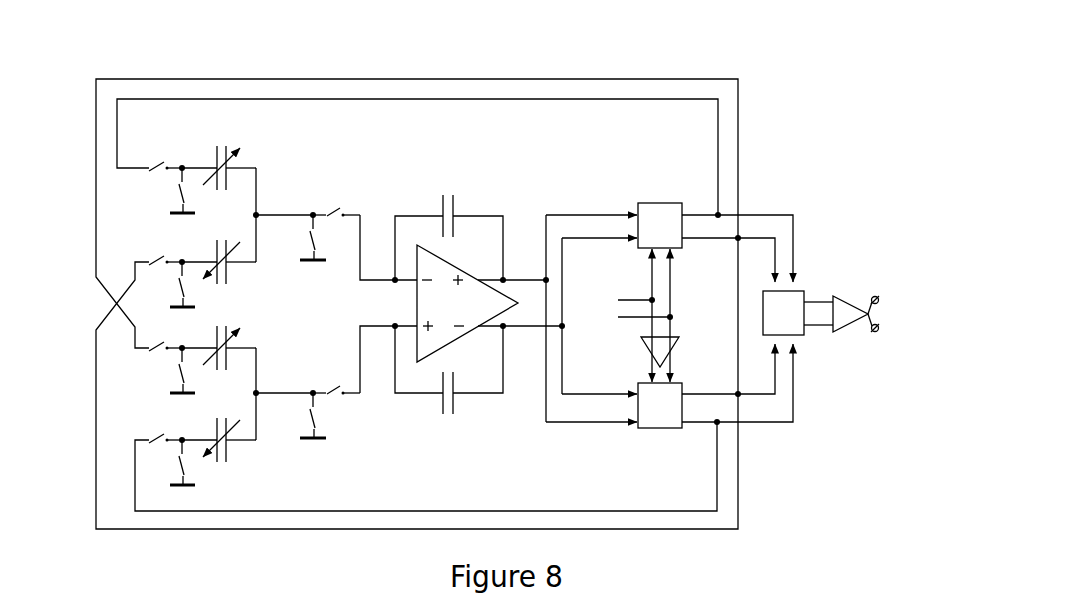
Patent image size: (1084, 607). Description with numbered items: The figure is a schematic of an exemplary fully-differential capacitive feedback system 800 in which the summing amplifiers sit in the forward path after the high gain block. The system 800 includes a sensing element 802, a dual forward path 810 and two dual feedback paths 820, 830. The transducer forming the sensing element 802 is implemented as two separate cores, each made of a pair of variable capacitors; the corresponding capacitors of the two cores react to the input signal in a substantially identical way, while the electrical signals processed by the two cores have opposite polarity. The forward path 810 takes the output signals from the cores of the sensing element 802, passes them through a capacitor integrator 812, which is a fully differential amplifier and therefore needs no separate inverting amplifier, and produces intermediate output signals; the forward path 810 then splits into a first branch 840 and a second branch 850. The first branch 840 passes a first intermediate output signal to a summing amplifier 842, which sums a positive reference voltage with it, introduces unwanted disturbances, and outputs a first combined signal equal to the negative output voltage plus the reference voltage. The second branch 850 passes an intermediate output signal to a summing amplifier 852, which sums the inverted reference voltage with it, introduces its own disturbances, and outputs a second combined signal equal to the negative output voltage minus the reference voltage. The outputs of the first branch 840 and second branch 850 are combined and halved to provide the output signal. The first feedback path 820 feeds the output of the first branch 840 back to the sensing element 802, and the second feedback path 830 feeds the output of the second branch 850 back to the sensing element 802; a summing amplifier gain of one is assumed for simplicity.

The system 800 is at (759, 58).
The sensing element 802 is at (258, 309).
The dual forward path 810 is at (364, 173).
The capacitor integrator 812 is at (421, 419).
The first feedback path 820 is at (750, 170).
The second feedback path 830 is at (749, 469).
The first branch 840 is at (577, 184).
The summing amplifier 842 is at (652, 202).
The second branch 850 is at (564, 433).
The summing amplifier 852 is at (656, 432).